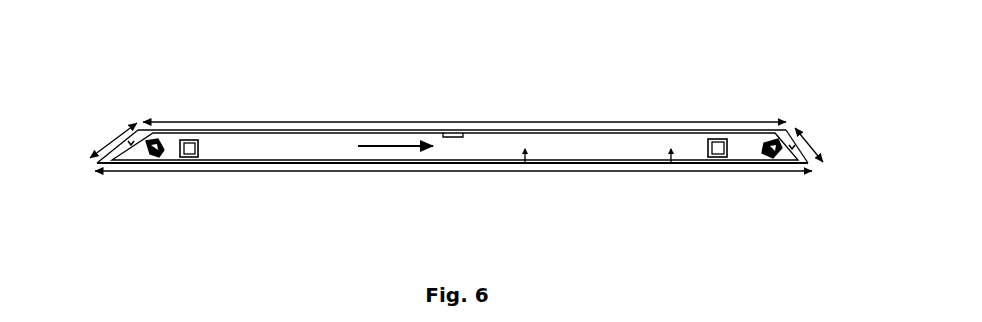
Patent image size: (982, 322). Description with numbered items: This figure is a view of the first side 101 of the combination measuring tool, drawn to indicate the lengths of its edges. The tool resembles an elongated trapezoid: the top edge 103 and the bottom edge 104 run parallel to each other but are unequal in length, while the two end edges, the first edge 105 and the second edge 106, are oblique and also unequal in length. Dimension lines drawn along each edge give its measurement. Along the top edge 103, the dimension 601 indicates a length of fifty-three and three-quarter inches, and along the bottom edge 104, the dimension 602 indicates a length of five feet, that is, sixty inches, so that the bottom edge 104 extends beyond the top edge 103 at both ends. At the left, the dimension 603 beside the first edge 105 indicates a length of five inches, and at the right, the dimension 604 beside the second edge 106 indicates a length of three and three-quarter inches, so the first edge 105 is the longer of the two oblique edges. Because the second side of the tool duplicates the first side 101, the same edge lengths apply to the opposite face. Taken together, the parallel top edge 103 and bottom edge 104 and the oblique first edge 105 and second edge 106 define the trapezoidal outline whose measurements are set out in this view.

The first side 101 is at (460, 157).
The top edge 103 is at (284, 117).
The bottom edge 104 is at (605, 173).
The first edge 105 is at (92, 135).
The second edge 106 is at (830, 145).
The length of top edge 601 is at (725, 118).
The length of bottom edge 602 is at (224, 177).
The length of first edge 603 is at (107, 138).
The length of second edge 604 is at (811, 140).